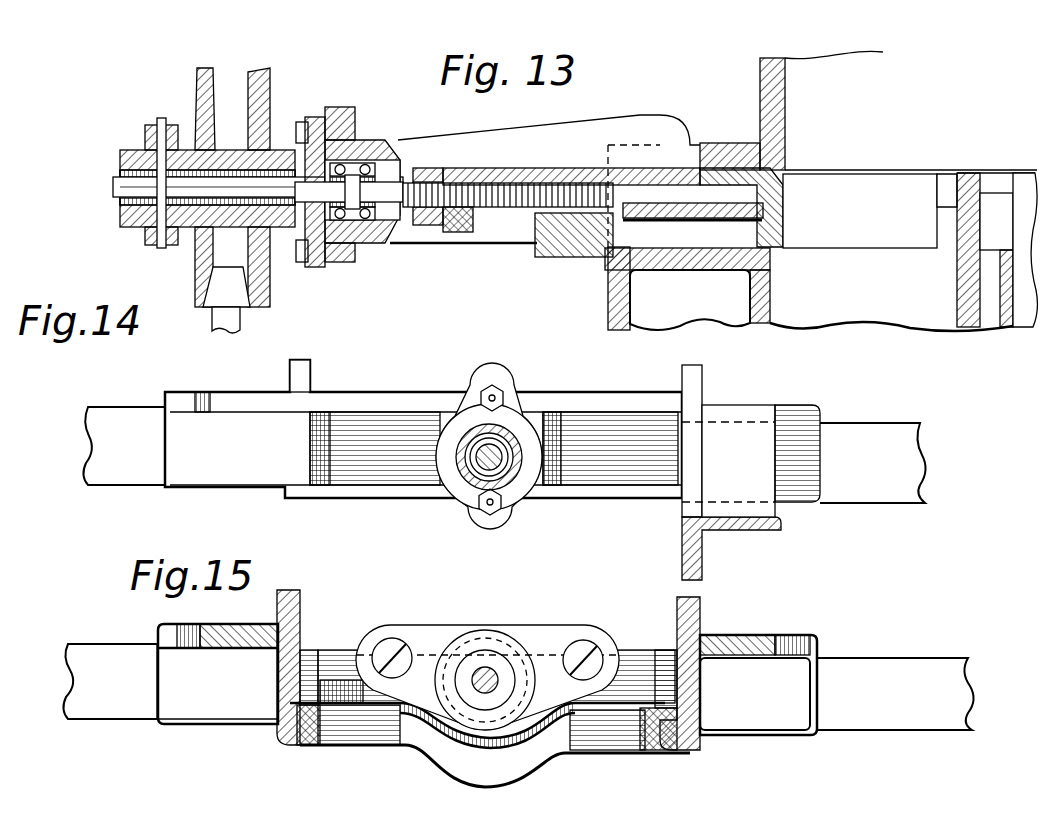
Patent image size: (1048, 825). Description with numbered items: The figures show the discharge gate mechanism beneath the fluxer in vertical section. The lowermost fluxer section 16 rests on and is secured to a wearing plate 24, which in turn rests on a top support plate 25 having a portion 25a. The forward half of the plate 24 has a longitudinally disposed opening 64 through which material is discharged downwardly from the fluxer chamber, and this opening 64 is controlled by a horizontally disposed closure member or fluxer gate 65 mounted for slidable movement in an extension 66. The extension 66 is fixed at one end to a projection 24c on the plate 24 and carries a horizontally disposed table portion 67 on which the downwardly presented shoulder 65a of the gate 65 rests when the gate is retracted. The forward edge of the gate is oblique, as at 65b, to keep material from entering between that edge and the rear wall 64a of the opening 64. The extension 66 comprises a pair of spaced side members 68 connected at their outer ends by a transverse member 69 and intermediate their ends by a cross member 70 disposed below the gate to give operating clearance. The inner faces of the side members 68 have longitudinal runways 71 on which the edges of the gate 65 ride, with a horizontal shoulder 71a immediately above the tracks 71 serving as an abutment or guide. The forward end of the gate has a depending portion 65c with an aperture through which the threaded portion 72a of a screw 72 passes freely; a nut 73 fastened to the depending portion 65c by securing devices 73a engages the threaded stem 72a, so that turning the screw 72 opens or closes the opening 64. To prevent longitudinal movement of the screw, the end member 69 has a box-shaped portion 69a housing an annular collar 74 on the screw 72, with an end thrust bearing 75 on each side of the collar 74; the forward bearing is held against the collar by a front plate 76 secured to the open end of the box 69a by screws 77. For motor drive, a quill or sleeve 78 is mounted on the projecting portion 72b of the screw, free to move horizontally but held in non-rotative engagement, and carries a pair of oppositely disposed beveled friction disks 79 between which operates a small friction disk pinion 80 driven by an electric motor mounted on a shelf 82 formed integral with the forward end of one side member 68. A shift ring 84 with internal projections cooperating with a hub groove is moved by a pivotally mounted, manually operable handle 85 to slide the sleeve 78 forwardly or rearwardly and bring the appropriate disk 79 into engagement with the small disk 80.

In FIG. 13, the fluxer section 16 is at (760, 70).
In FIG. 13, the wearing plate 24 is at (986, 196).
In FIG. 14, the wearing plate 24 is at (96, 442).
In FIG. 15, the wearing plate 24 is at (78, 656).
In FIG. 14, the projection 24c is at (164, 457).
In FIG. 15, the projection 24c is at (155, 690).
In FIG. 13, the top support plate 25 is at (769, 306).
In FIG. 13, the housing wall 25a is at (1020, 322).
In FIG. 13, the opening 64 is at (866, 186).
In FIG. 13, the rear wall 64a is at (955, 195).
In FIG. 13, the closure member 65 is at (706, 143).
In FIG. 15, the closure member 65 is at (339, 702).
In FIG. 13, the shoulder 65a is at (687, 279).
In FIG. 13, the oblique forward edge 65b is at (772, 188).
In FIG. 13, the depending portion 65c is at (468, 233).
In FIG. 13, the extension 66 is at (588, 116).
In FIG. 14, the extension 66 is at (176, 386).
In FIG. 15, the extension 66 is at (272, 734).
In FIG. 13, the table portion 67 is at (690, 300).
In FIG. 13, the side members 68 is at (505, 129).
In FIG. 14, the side members 68 is at (292, 372).
In FIG. 15, the side members 68 is at (301, 600).
In FIG. 14, the transverse member 69 is at (386, 401).
In FIG. 13, the box-shaped portion 69a is at (342, 107).
In FIG. 14, the box-shaped portion 69a is at (536, 401).
In FIG. 13, the cross member 70 is at (573, 258).
In FIG. 15, the cross member 70 is at (436, 762).
In FIG. 15, the runways 71 is at (307, 750).
In FIG. 15, the shoulder 71a is at (311, 655).
In FIG. 13, the screw 72 is at (366, 243).
In FIG. 14, the screw 72 is at (502, 438).
In FIG. 13, the threaded portion 72a is at (508, 214).
In FIG. 15, the threaded portion 72a is at (493, 674).
In FIG. 13, the projecting portion 72b is at (115, 182).
In FIG. 13, the nut 73 is at (429, 226).
In FIG. 15, the nut 73 is at (471, 640).
In FIG. 15, the securing devices 73a is at (393, 650).
In FIG. 13, the collar 74 is at (370, 163).
In FIG. 13, the end thrust bearing 75 is at (395, 152).
In FIG. 13, the front plate 76 is at (314, 268).
In FIG. 14, the front plate 76 is at (455, 474).
In FIG. 13, the screws 77 is at (302, 122).
In FIG. 14, the screws 77 is at (489, 394).
In FIG. 13, the sleeve 78 is at (120, 215).
In FIG. 14, the sleeve 78 is at (472, 482).
In FIG. 13, the beveled friction disks 79 is at (256, 82).
In FIG. 13, the friction disk pinion 80 is at (216, 290).
In FIG. 14, the shelf 82 is at (763, 532).
In FIG. 13, the shift ring 84 is at (145, 150).
In FIG. 13, the handle 85 is at (162, 124).